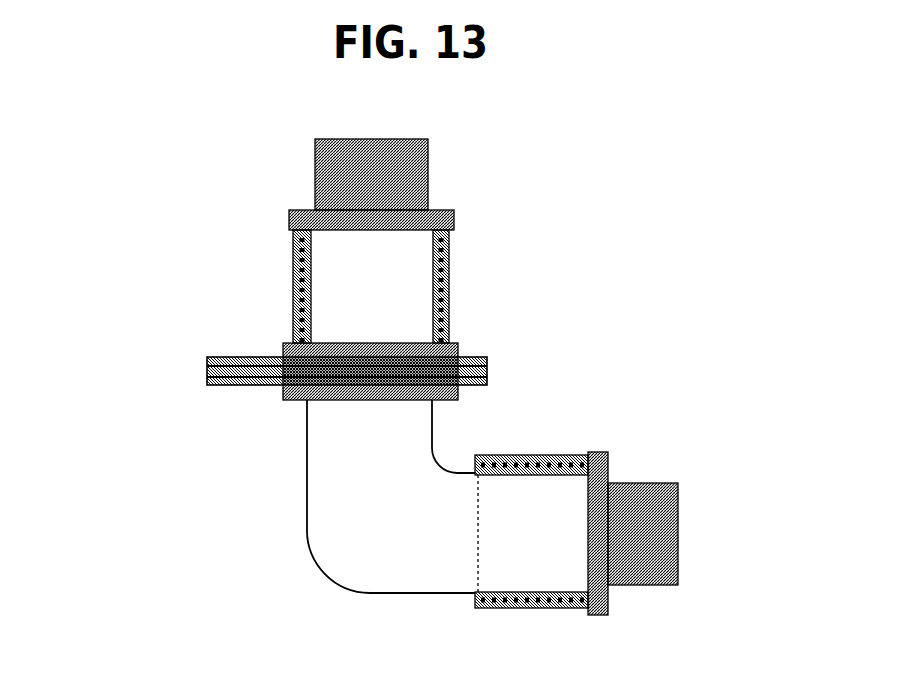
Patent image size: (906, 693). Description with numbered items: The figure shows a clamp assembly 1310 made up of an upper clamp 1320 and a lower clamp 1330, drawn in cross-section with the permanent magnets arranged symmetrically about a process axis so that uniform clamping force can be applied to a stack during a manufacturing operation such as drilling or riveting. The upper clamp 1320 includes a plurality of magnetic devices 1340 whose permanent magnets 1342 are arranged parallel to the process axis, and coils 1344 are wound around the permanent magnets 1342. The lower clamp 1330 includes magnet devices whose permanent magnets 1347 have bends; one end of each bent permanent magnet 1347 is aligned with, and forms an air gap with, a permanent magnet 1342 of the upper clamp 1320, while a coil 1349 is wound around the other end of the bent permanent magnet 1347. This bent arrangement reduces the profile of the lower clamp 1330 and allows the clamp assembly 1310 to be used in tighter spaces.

The clamp assembly 1310 is at (597, 141).
The upper clamp 1320 is at (205, 193).
The lower clamp 1330 is at (233, 567).
The magnetic device 1340 is at (290, 273).
The permanent magnet 1342 is at (398, 302).
The coil 1344 is at (447, 272).
The bent permanent magnet 1347 is at (548, 555).
The coil 1349 is at (540, 607).